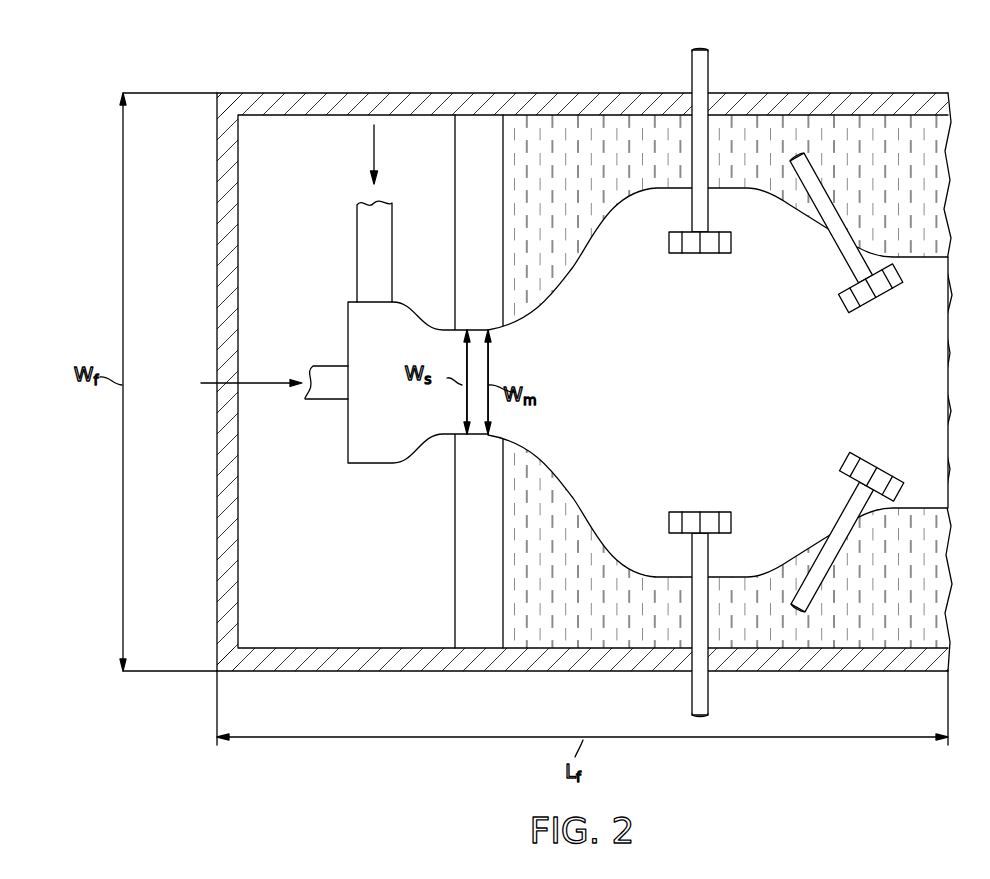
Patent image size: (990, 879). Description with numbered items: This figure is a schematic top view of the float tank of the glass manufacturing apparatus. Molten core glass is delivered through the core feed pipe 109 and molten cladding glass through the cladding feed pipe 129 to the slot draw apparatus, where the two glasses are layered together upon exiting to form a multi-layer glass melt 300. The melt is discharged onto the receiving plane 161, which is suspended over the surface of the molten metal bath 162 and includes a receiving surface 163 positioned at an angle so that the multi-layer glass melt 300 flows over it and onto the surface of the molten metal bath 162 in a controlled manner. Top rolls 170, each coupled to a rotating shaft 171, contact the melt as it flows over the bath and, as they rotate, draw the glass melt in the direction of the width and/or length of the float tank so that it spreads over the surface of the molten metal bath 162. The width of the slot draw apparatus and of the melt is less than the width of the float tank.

The core feed pipe 109 is at (322, 403).
The cladding feed pipe 129 is at (355, 258).
The receiving plane 161 is at (318, 127).
The molten metal bath 162 is at (566, 127).
The receiving surface 163 is at (485, 127).
The top roll 170 is at (731, 243).
The rotating shaft 171 is at (710, 72).
The multi-layer glass melt 300 is at (589, 300).